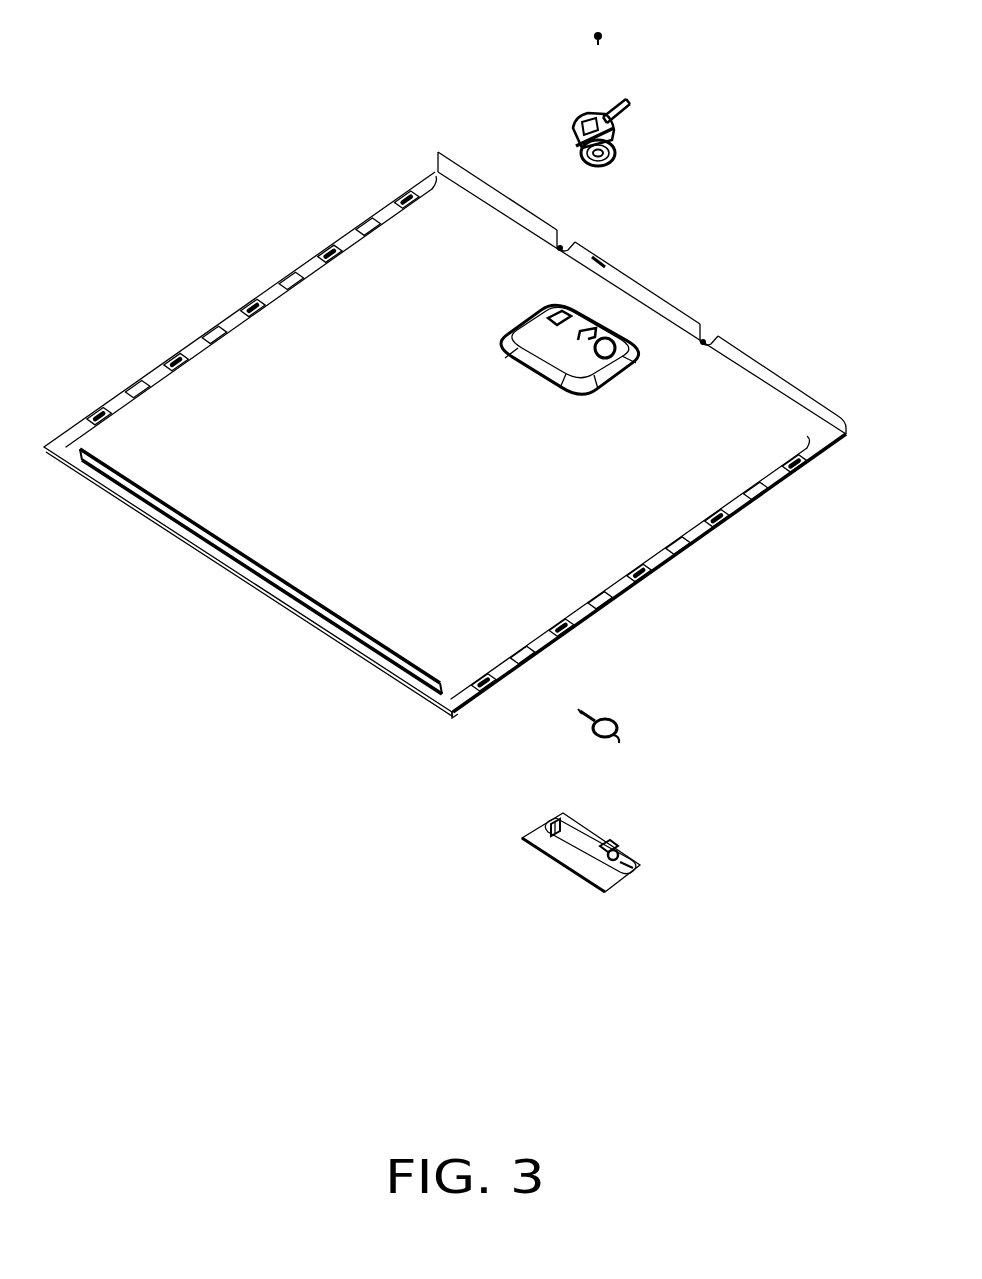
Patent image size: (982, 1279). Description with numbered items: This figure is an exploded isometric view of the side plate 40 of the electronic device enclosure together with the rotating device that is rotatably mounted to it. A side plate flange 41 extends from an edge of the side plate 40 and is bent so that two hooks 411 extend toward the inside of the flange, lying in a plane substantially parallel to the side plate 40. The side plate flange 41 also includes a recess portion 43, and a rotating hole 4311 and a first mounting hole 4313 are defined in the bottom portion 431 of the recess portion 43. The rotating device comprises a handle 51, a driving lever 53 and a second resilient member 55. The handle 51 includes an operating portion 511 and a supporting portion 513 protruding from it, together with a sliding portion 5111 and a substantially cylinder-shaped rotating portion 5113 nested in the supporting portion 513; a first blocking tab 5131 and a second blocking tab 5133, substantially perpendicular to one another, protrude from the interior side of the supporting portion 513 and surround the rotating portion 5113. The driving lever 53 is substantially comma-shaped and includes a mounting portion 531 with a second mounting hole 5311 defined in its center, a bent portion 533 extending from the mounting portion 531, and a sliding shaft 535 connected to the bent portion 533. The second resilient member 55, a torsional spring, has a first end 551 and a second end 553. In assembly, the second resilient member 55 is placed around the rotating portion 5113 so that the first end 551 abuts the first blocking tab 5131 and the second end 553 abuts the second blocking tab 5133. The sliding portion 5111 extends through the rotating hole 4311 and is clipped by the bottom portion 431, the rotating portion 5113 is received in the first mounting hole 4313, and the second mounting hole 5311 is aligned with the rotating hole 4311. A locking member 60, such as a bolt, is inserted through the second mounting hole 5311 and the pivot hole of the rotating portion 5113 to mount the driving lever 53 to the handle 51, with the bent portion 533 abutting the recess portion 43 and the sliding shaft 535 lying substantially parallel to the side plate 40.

The side plate 40 is at (250, 530).
The side plate flange 41 is at (770, 376).
The hooks 411 is at (560, 240).
The recess portion 43 is at (630, 368).
The bottom portion 431 is at (580, 365).
The rotating hole 4311 is at (567, 312).
The first mounting hole 4313 is at (607, 345).
The handle 51 is at (575, 860).
The operating portion 511 is at (586, 876).
The sliding portion 5111 is at (553, 828).
The supporting portion 513 is at (619, 882).
The first blocking tab 5131 is at (606, 843).
The rotating portion 5113 is at (623, 858).
The second blocking tab 5133 is at (628, 869).
The driving lever 53 is at (607, 123).
The mounting portion 531 is at (588, 160).
The second mounting hole 5311 is at (608, 146).
The bent portion 533 is at (583, 118).
The sliding shaft 535 is at (627, 105).
The second resilient member 55 is at (657, 714).
The first end 551 is at (583, 712).
The second end 553 is at (618, 738).
The locking member 60 is at (605, 34).